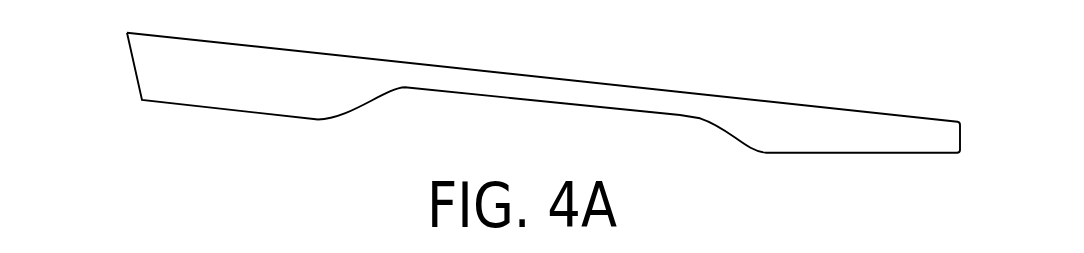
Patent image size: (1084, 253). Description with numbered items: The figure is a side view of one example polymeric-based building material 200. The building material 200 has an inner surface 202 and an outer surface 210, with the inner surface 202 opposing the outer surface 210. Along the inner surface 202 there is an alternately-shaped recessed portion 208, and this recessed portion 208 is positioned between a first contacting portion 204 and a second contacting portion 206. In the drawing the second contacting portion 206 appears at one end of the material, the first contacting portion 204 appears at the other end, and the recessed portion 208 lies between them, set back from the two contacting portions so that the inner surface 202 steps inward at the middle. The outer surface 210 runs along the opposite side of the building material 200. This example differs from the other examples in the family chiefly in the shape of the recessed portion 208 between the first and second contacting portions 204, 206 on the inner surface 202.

The polymeric-based building material 200 is at (84, 50).
The inner surface 202 is at (722, 130).
The first contacting portion 204 is at (850, 168).
The second contacting portion 206 is at (233, 128).
The recessed portion 208 is at (518, 114).
The outer surface 210 is at (707, 93).